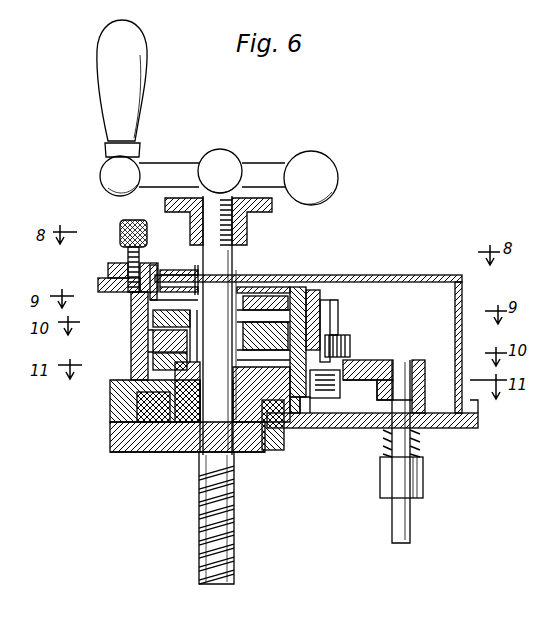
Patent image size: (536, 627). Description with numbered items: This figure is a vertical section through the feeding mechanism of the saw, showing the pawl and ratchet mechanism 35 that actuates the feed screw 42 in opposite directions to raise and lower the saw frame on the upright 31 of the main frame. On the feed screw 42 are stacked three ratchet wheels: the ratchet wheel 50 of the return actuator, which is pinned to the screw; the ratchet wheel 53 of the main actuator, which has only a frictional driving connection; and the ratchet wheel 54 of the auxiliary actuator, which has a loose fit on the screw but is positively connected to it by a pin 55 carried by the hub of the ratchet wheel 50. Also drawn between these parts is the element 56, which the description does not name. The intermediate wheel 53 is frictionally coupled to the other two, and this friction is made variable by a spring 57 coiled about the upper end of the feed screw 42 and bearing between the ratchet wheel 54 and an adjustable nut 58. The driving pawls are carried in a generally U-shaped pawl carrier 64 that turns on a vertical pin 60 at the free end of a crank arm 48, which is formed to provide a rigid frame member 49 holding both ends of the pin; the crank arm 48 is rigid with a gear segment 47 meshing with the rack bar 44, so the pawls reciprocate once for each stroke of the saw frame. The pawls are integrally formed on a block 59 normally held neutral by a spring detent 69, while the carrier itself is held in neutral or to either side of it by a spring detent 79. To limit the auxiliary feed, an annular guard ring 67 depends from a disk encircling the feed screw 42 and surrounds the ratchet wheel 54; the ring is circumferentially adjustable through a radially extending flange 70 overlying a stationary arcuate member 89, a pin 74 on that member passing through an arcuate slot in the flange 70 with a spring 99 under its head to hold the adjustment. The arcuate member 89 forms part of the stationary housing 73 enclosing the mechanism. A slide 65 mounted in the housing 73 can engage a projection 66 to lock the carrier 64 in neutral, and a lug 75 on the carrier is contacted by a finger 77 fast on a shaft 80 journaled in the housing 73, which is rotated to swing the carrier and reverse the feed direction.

The spring 99 is at (118, 222).
The adjustable nut 58 is at (273, 207).
The spring 57 is at (245, 262).
The feed screw 42 is at (210, 572).
The radially extending flange 70 is at (118, 250).
The pin 74 is at (143, 270).
The stationary arcuate member 89 is at (109, 272).
The ratchet wheel 54 is at (128, 305).
The pin 55 is at (174, 313).
The washer 56 is at (150, 346).
The ratchet wheel 53 is at (153, 338).
The ratchet wheel 50 is at (150, 362).
The rack bar 44 is at (125, 408).
The upright 31 is at (118, 433).
The pawl and ratchet mechanism 35 is at (128, 466).
The gear segment 47 is at (188, 452).
The crank arm 48 is at (283, 452).
The stationary housing 73 is at (420, 275).
The guard ring 67 is at (304, 288).
The rigid frame member 49 is at (318, 298).
The pawl carrier 64 is at (322, 292).
The pin 60 is at (330, 302).
The block 59 is at (335, 318).
The spring detent 69 is at (350, 343).
The lug 75 is at (358, 358).
The finger 77 is at (392, 360).
The slide 65 is at (355, 429).
The projection 66 is at (305, 414).
The spring detent 79 is at (320, 429).
The shaft 80 is at (404, 524).